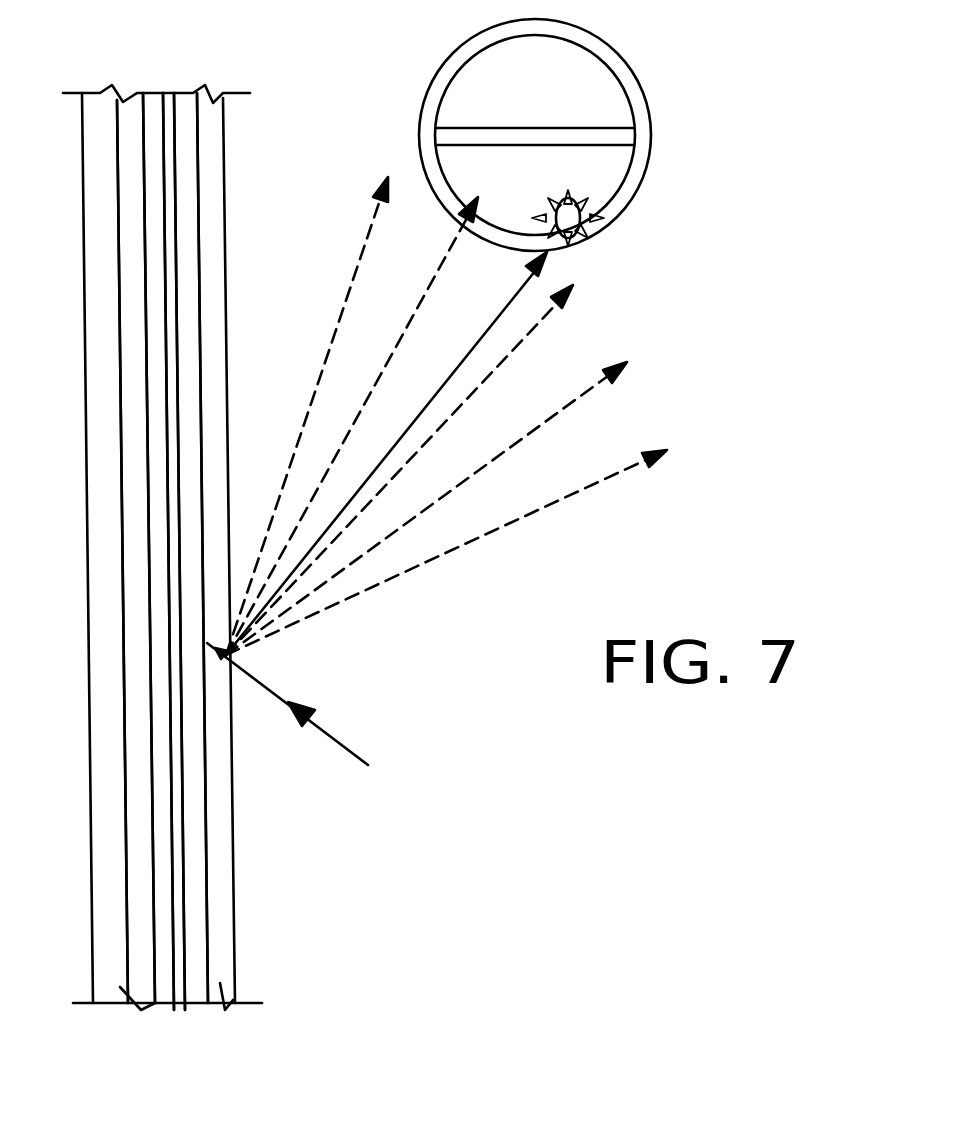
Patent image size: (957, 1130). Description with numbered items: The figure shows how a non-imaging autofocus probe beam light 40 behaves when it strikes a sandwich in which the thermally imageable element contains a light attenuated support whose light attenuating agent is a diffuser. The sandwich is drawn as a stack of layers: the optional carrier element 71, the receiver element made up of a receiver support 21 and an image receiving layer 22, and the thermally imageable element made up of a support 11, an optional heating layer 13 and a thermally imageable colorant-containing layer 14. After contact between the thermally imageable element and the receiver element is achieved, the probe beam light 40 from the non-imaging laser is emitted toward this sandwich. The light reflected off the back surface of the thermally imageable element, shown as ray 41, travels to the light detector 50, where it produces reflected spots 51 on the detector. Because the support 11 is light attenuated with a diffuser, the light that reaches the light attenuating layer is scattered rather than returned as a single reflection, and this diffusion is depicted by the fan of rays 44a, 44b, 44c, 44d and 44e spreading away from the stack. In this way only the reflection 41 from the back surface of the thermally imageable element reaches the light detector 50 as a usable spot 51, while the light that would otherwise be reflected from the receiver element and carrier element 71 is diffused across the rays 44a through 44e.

The support 11 is at (243, 575).
The heating layer 13 is at (219, 589).
The thermally imageable colorant-containing layer 14 is at (195, 602).
The receiver support 21 is at (118, 589).
The image receiving layer 22 is at (144, 602).
The carrier element 71 is at (91, 575).
The probe beam light 40 is at (348, 745).
The light reflected off the back surface of the thermally imageable element 41 is at (473, 337).
The diffused light 44a is at (352, 275).
The diffused light 44b is at (423, 295).
The diffused light 44c is at (483, 372).
The diffused light 44d is at (525, 432).
The diffused light 44e is at (573, 492).
The light detector 50 is at (627, 63).
The multiple reflected spots 51 is at (600, 227).